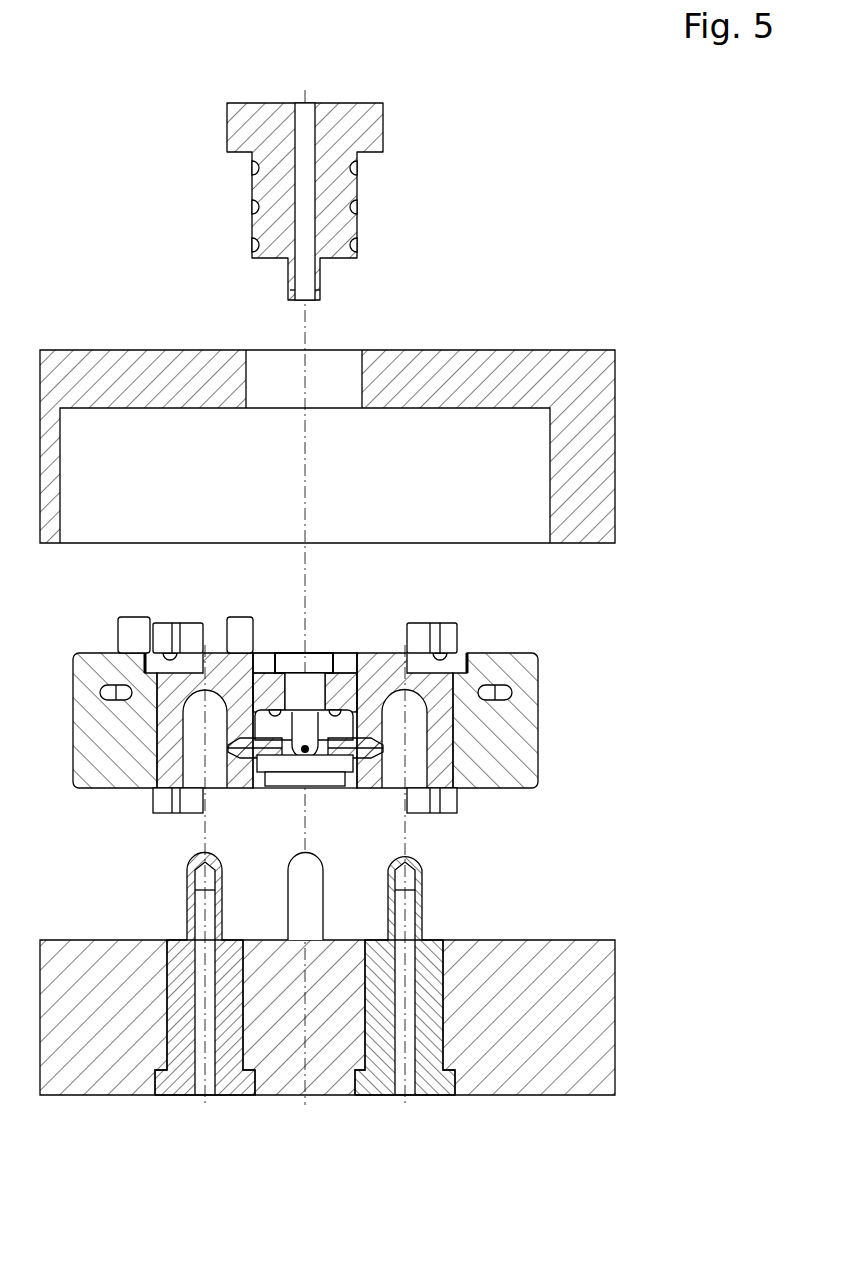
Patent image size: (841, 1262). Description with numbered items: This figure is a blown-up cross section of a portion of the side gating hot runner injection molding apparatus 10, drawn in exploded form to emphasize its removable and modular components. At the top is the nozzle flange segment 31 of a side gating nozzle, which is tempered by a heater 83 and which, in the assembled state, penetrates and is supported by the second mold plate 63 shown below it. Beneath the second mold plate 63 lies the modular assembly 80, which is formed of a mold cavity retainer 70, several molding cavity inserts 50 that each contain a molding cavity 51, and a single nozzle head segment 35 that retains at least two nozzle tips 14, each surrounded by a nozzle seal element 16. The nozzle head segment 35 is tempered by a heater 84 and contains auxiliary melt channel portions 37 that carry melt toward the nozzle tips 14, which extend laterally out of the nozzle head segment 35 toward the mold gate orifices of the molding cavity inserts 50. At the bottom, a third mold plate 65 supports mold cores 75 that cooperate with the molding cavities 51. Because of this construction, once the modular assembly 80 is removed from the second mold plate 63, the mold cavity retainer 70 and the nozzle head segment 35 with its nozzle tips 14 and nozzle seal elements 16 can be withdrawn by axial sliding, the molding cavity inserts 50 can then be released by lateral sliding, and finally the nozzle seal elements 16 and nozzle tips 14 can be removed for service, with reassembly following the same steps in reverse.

The side gating hot runner injection molding apparatus 10 is at (519, 81).
The nozzle flange segment 31 is at (375, 201).
The heater 83 is at (356, 169).
The second mold plate 63 is at (515, 372).
The modular assembly 80 is at (605, 644).
The mold cavity retainer 70 is at (540, 736).
The molding cavity insert 50 is at (444, 765).
The molding cavity 51 is at (408, 772).
The heater 84 is at (337, 712).
The nozzle seal element 16 is at (247, 745).
The auxiliary melt channel portion 37 is at (340, 770).
The nozzle tip 14 is at (246, 770).
The nozzle head segment 35 is at (318, 765).
The third mold plate 65 is at (327, 974).
The mold core 75 is at (432, 950).